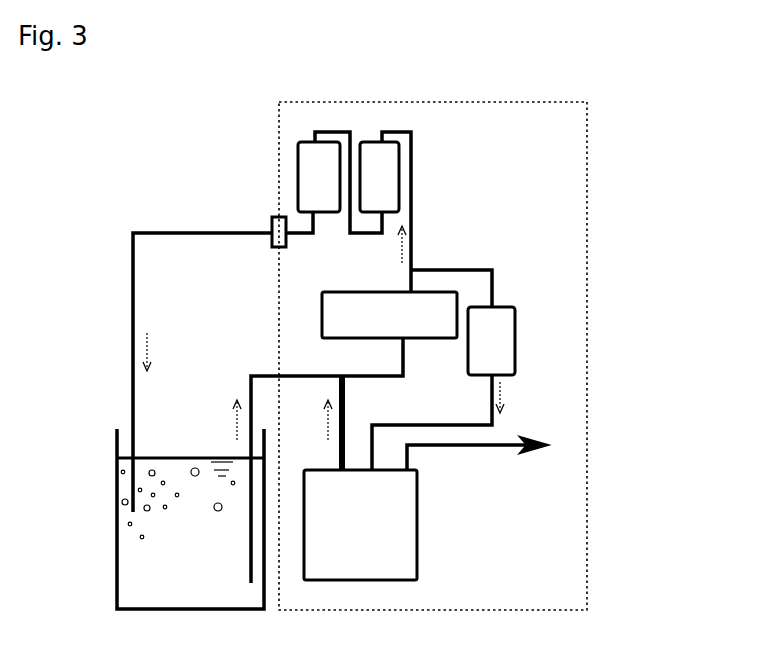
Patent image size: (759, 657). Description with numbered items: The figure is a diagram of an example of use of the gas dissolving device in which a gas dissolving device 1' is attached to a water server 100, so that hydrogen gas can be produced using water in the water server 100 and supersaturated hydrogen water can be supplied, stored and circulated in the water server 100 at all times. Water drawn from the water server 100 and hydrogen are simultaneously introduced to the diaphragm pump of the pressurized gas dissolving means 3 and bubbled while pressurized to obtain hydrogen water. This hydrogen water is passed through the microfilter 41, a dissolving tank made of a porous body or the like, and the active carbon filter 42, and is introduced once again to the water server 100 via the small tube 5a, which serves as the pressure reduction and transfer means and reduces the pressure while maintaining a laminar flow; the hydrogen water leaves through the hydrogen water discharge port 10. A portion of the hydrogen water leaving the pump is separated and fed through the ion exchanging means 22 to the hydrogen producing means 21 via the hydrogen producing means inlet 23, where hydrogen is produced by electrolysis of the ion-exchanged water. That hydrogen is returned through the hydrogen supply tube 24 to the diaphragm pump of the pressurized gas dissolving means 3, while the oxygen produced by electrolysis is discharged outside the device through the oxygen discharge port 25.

The gas dissolving device 1' is at (466, 356).
The pressurized gas dissolving means 3 is at (389, 315).
The small tube 5a is at (292, 230).
The hydrogen water discharge port 10 is at (272, 222).
The hydrogen producing means 21 is at (360, 525).
The ion exchanging means 22 is at (491, 341).
The hydrogen producing means inlet 23 is at (490, 401).
The hydrogen supply tube 24 is at (342, 417).
The oxygen discharge port 25 is at (483, 447).
The microfilter 41 is at (385, 212).
The active carbon filter 42 is at (340, 182).
The water server 100 is at (117, 553).